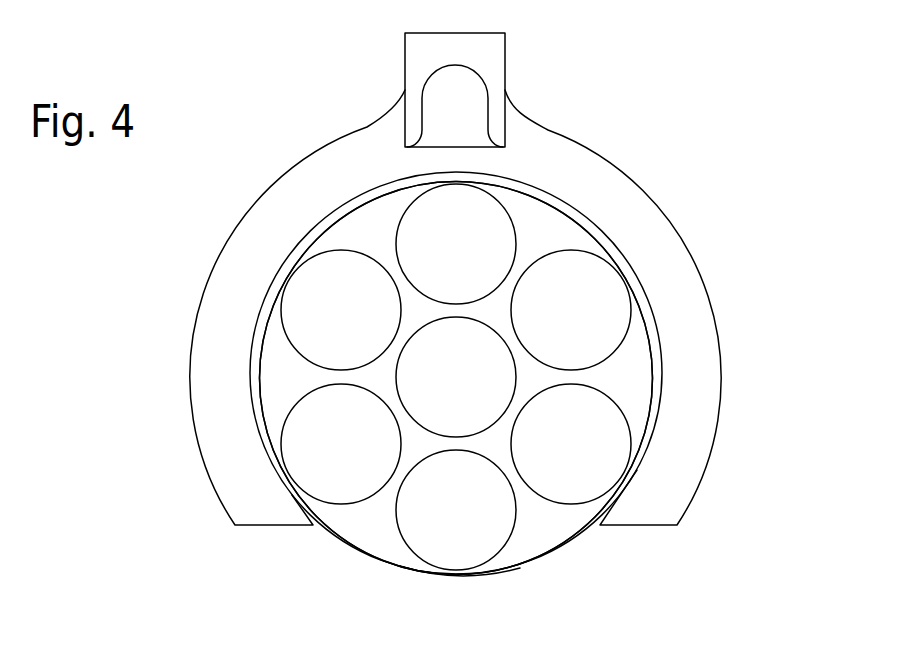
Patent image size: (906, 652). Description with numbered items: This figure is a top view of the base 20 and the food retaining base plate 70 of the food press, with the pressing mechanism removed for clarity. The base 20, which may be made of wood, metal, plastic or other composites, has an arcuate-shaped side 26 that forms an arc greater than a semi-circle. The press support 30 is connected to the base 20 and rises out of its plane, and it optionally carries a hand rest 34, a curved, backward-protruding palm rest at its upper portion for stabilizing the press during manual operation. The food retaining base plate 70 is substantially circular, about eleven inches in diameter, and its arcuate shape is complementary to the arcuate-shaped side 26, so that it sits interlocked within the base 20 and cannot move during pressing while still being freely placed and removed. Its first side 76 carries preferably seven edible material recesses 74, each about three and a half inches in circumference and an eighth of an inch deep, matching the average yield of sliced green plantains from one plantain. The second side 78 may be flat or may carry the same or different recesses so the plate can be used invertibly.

The base 20 is at (219, 252).
The arcuate-shaped side 26 is at (655, 320).
The press support 30 is at (405, 66).
The hand rest 34 is at (462, 47).
The food retaining base plate 70 is at (337, 538).
The edible material recesses 74 is at (565, 322).
The first side 76 is at (547, 525).
The second side 78 is at (422, 578).